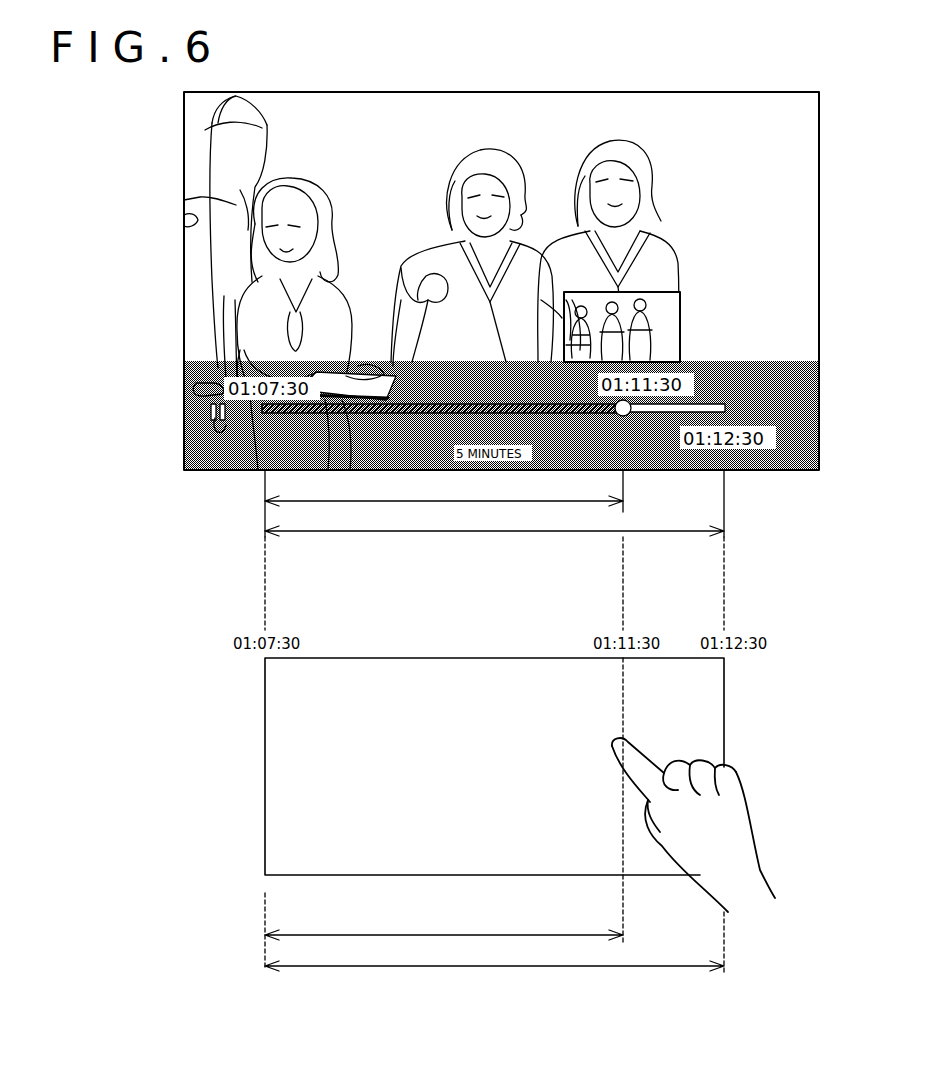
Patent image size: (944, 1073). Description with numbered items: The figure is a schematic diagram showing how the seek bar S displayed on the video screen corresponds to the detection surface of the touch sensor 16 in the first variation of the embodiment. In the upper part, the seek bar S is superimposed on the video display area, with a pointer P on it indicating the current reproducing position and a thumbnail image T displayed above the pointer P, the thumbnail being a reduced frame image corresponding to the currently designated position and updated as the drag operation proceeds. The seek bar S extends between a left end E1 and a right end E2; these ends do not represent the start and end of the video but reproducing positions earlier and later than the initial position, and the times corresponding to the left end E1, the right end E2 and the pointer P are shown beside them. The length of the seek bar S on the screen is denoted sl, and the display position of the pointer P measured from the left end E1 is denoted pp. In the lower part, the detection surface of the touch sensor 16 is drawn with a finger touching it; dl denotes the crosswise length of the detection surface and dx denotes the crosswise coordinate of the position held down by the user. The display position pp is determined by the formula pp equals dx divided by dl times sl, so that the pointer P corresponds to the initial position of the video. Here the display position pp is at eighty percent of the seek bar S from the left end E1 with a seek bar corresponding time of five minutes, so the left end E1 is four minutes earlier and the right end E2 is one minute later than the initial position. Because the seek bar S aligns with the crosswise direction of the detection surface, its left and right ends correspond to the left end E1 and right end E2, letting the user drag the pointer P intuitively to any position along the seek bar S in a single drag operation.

The left end of the seek bar E1 is at (262, 409).
The right end of the seek bar E2 is at (728, 404).
The seek bar S is at (403, 410).
The pointer P is at (619, 415).
The thumbnail image T is at (686, 318).
The touch sensor 16 is at (726, 731).
The display position of the pointer pp is at (444, 511).
The length of the seek bar sl is at (494, 541).
The X-axis direction coordinate of the held-down detection surface position dx is at (444, 945).
The crosswise length of the detection surface dl is at (494, 976).